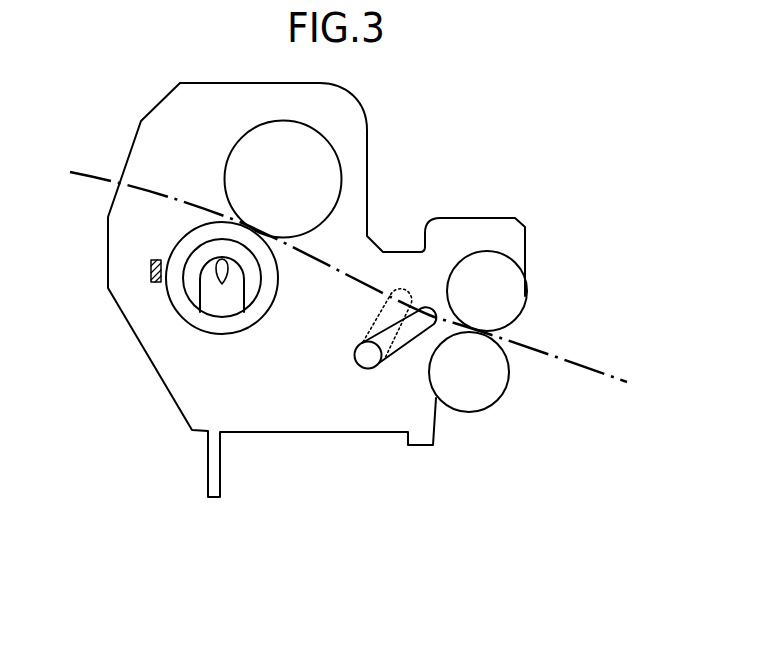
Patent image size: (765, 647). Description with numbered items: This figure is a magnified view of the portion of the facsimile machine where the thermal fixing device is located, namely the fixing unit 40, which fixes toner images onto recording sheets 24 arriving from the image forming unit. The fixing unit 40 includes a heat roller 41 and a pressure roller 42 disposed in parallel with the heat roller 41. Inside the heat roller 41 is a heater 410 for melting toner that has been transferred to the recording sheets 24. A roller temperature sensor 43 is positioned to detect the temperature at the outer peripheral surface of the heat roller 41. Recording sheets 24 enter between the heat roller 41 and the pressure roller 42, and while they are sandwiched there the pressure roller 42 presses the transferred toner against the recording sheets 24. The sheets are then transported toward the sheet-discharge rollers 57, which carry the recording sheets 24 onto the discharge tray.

The recording sheet 24 is at (553, 349).
The fixing unit 40 is at (370, 514).
The heat roller 41 is at (250, 323).
The pressure roller 42 is at (322, 220).
The roller temperature sensor 43 is at (150, 266).
The sheet-discharge rollers 57 is at (492, 397).
The heater 410 is at (200, 285).